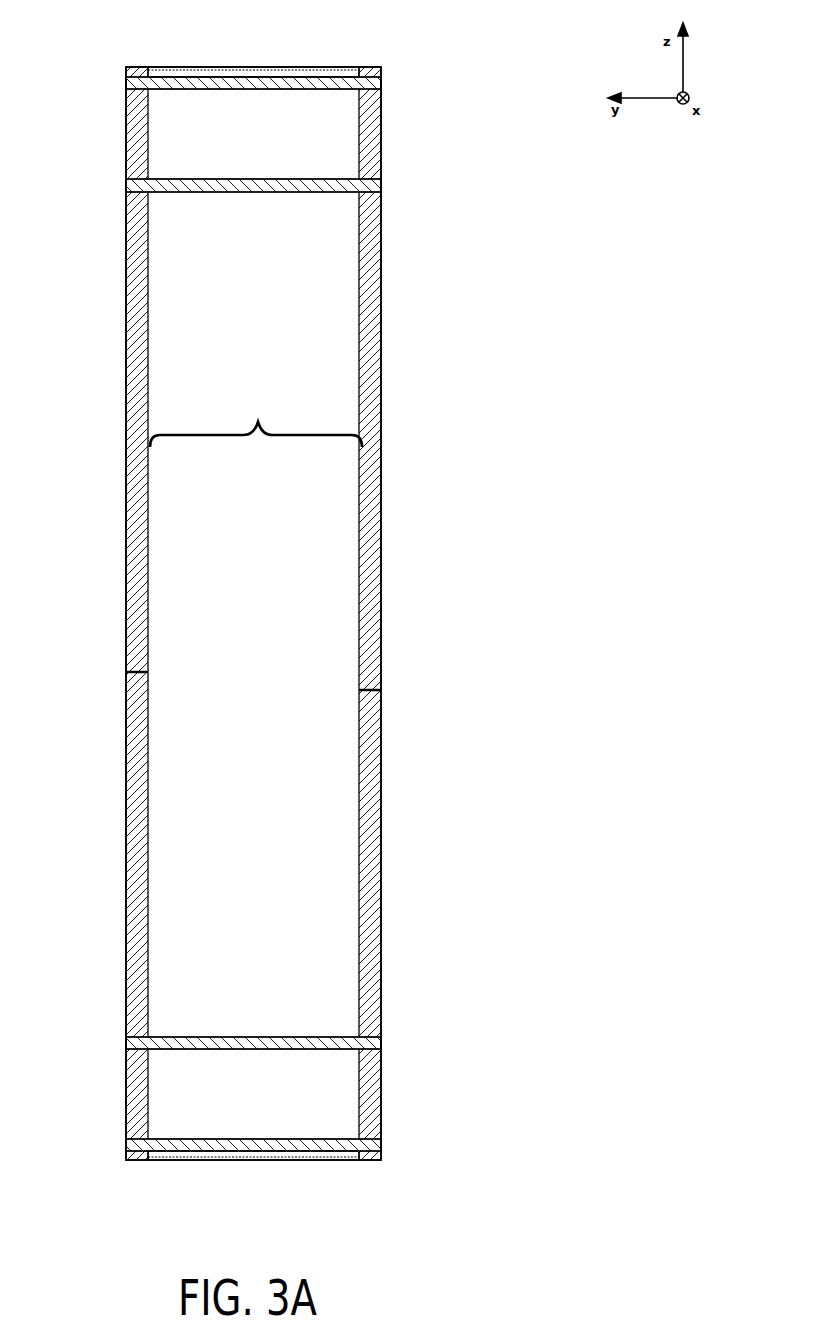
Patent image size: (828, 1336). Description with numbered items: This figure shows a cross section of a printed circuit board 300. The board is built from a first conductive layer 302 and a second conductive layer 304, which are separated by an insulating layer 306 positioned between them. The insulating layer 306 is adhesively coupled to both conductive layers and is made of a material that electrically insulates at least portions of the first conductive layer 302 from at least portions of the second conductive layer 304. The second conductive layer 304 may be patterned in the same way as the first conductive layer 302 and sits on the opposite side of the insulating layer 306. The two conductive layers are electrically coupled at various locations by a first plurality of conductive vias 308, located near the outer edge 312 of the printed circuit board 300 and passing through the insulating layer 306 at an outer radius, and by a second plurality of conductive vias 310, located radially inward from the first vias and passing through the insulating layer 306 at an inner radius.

The printed circuit board 300 is at (580, 223).
The first conductive layer 302 is at (372, 690).
The second conductive layer 304 is at (141, 671).
The insulating layer 306 is at (255, 420).
The first plurality of conductive vias 308 is at (379, 82).
The second plurality of conductive vias 310 is at (379, 184).
The outer edge 312 is at (191, 67).